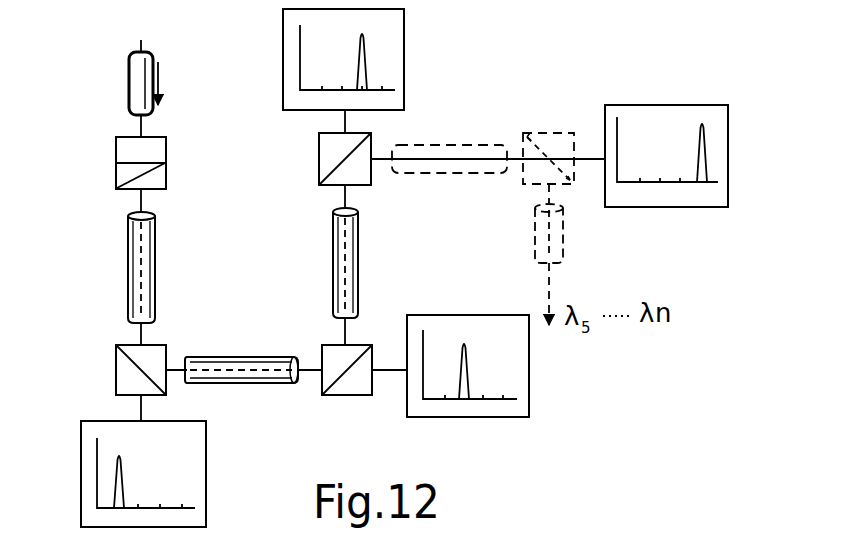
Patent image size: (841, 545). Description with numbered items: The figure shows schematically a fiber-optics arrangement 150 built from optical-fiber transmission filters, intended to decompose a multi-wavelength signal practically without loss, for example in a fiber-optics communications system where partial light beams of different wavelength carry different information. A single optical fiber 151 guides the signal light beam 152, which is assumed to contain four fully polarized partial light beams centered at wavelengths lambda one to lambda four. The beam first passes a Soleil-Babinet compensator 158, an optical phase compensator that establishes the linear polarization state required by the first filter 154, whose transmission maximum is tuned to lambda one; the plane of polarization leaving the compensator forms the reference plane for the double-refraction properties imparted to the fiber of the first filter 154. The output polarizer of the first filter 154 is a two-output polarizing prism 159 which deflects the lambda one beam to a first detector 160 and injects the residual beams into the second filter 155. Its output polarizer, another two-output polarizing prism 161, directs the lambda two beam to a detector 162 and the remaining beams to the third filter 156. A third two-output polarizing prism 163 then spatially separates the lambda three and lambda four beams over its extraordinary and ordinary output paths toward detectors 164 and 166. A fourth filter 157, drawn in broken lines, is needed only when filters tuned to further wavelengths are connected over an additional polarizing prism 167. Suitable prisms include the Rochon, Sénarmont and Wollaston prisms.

The fiber-optics arrangement 150 is at (472, 127).
The optical fiber 151 is at (129, 87).
The signal light beam 152 is at (161, 88).
The first fiber-optics transmission filter 154 is at (123, 266).
The second fiber-optics transmission filter 155 is at (234, 353).
The third fiber-optics transmission filter 156 is at (329, 266).
The fourth fiber-optics transmission filter 157 is at (455, 178).
The Soleil-Babinet compensator 158 is at (118, 148).
The second beam splitter 159 is at (117, 375).
The first detector 160 is at (188, 444).
The two-output polarizing prism 161 is at (358, 386).
The detector 162 is at (529, 377).
The third two-output polarizing prism 163 is at (319, 153).
The detector 164 is at (283, 42).
The detector 166 is at (651, 123).
The additional polarizing prism 167 is at (555, 132).